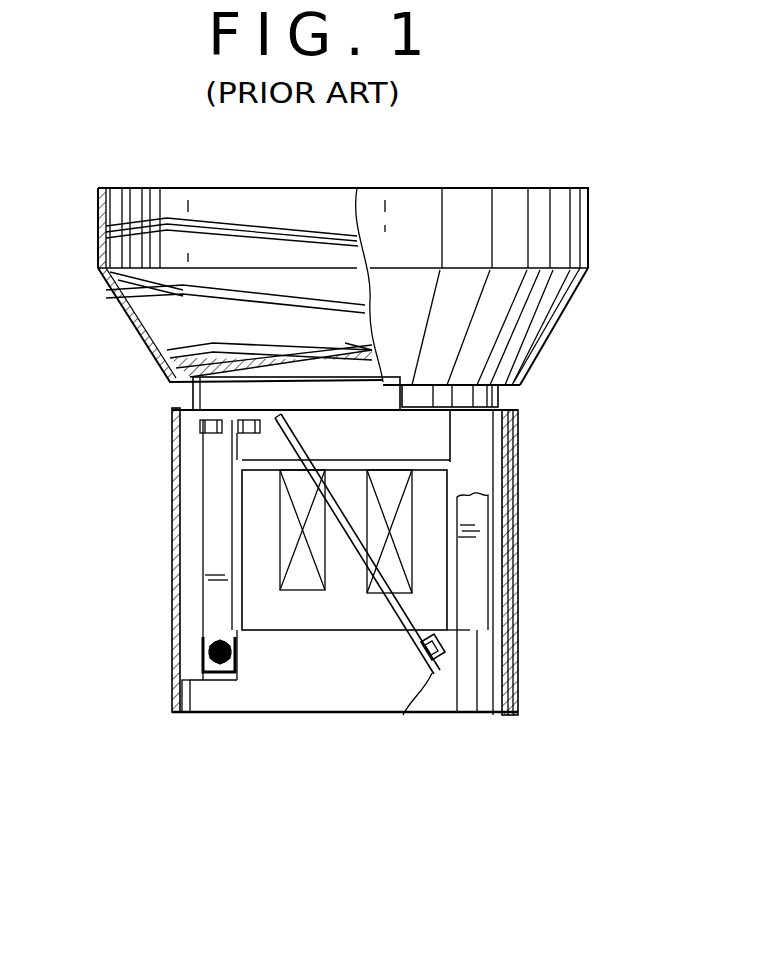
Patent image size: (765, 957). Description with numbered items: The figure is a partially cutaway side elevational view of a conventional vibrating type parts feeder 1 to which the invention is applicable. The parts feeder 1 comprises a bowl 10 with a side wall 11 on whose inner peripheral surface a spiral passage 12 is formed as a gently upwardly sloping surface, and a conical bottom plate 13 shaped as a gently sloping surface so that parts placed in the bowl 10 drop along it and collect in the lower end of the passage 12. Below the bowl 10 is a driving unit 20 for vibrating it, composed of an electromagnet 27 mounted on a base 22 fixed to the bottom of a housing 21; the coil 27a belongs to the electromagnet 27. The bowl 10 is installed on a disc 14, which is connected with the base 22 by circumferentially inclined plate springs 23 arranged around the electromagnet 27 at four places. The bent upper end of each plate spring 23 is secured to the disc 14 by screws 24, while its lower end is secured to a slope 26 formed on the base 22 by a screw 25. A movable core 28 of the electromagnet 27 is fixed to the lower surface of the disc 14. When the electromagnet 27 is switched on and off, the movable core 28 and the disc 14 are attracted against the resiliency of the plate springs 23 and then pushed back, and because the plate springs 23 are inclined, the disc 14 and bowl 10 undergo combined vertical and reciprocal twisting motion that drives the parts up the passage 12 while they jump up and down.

The parts feeder 1 is at (552, 358).
The bowl 10 is at (100, 288).
The side wall 11 is at (97, 215).
The spiral passage 12 is at (150, 217).
The conical bottom plate 13 is at (347, 343).
The disc 14 is at (192, 393).
The driving unit 20 is at (326, 596).
The housing 21 is at (172, 575).
The base 22 is at (237, 700).
The plate springs 23 is at (208, 517).
The screws 24 is at (172, 432).
The screw 25 is at (440, 648).
The slope 26 is at (403, 412).
The electromagnet 27 is at (282, 550).
The coil 27a is at (302, 588).
The movable core 28 is at (437, 442).